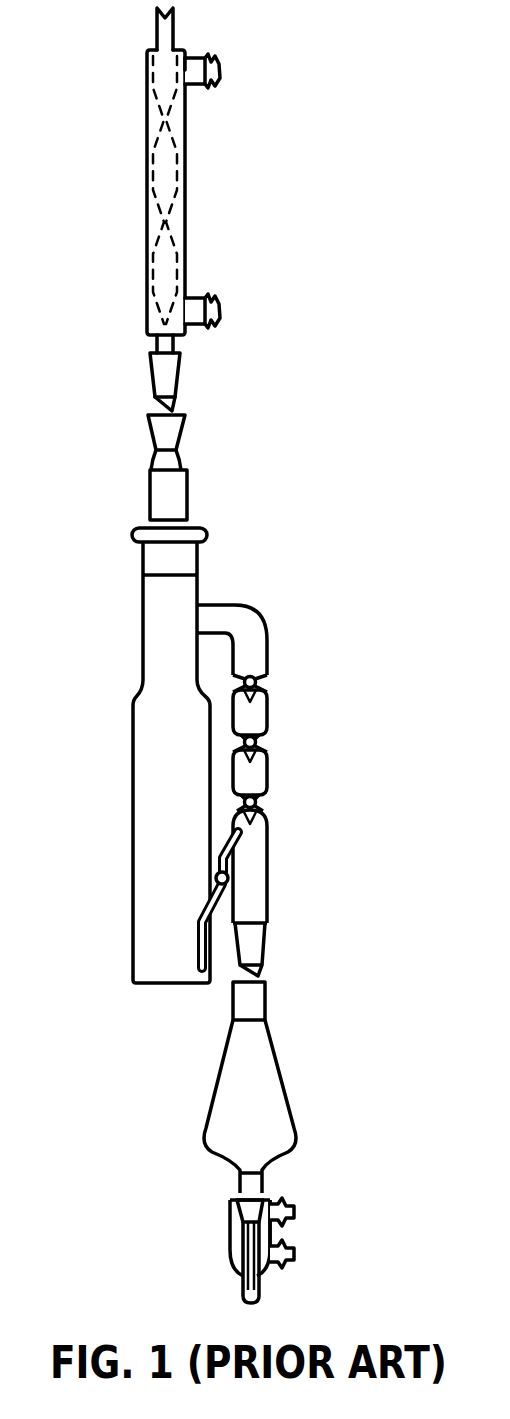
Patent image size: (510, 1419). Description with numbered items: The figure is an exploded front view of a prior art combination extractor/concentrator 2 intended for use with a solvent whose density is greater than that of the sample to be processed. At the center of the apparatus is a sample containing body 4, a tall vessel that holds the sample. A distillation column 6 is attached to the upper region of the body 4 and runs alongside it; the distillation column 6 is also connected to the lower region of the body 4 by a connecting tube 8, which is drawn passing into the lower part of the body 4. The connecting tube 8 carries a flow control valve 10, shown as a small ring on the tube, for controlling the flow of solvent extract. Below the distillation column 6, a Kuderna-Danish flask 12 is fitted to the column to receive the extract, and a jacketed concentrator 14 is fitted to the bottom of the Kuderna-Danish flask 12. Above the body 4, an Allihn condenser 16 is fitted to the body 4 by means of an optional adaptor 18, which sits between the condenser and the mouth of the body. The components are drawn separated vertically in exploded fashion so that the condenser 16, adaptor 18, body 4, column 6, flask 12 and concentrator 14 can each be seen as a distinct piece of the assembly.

The extractor/concentrator 2 is at (124, 1001).
The sample containing body 4 is at (133, 778).
The distillation column 6 is at (267, 852).
The connecting tube 8 is at (205, 905).
The flow control valve 10 is at (228, 878).
The Kuderna-Danish flask 12 is at (280, 1062).
The jacketed concentrator 14 is at (230, 1238).
The Allihn condenser 16 is at (185, 175).
The adaptor 18 is at (185, 460).